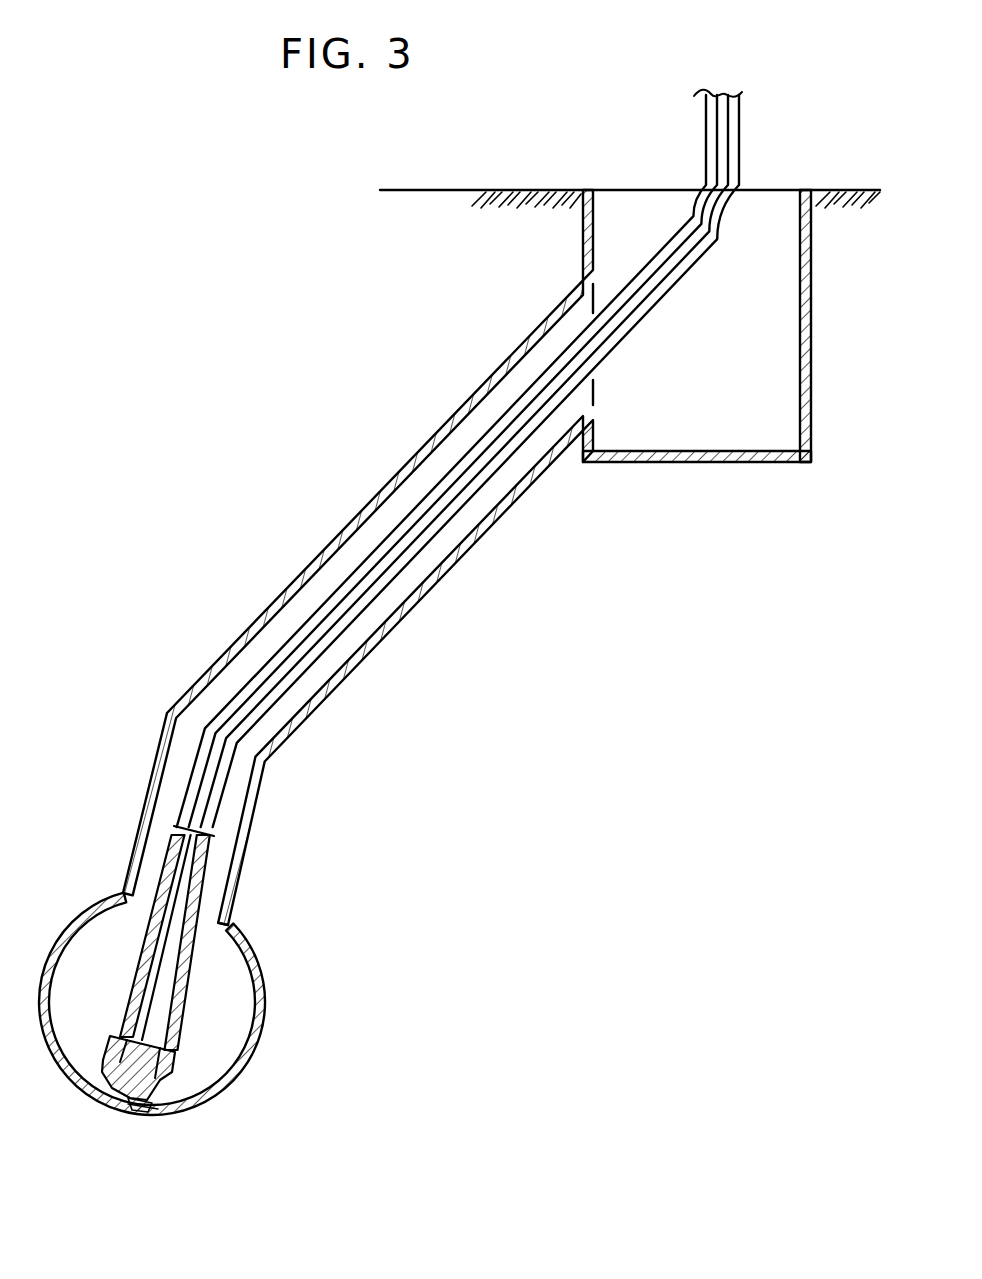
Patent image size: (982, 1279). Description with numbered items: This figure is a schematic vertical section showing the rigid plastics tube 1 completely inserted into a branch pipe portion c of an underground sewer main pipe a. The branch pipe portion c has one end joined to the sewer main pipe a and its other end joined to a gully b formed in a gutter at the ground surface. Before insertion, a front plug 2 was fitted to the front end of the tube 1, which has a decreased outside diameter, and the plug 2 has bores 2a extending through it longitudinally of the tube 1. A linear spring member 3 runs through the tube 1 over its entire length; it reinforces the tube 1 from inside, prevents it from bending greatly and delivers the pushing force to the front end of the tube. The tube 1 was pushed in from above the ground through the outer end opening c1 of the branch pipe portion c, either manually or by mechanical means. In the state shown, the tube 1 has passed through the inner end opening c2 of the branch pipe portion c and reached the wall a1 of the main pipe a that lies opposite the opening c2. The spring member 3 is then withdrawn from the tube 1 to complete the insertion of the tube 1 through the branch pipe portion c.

The rigid plastics tube 1 is at (473, 486).
The front plug 2 is at (175, 1083).
The bores 2a is at (127, 1103).
The linear spring member 3 is at (188, 873).
The sewer main pipe a is at (268, 998).
The wall of the main pipe a1 is at (137, 1117).
The gully b is at (812, 365).
The branch pipe portion c is at (422, 602).
The outer end opening c1 is at (594, 393).
The inner end opening c2 is at (204, 933).